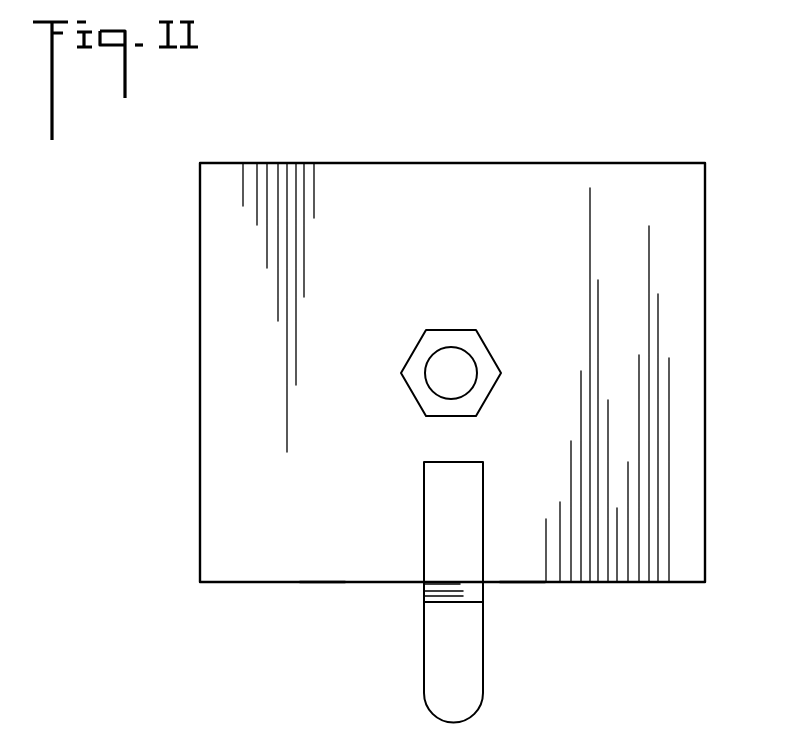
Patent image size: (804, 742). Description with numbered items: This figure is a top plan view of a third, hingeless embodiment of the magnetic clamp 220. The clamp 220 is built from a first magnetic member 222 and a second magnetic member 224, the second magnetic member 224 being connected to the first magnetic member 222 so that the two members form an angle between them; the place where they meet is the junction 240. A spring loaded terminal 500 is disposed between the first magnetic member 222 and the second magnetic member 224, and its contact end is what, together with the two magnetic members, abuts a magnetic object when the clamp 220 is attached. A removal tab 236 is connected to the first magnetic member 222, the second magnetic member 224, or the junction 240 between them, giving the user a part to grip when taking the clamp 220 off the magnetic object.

The magnetic clamp 220 is at (668, 112).
The spring loaded terminal 500 is at (400, 332).
The junction 240 is at (458, 444).
The first magnetic member 222 is at (322, 583).
The second magnetic member 224 is at (524, 583).
The removal tab 236 is at (441, 657).